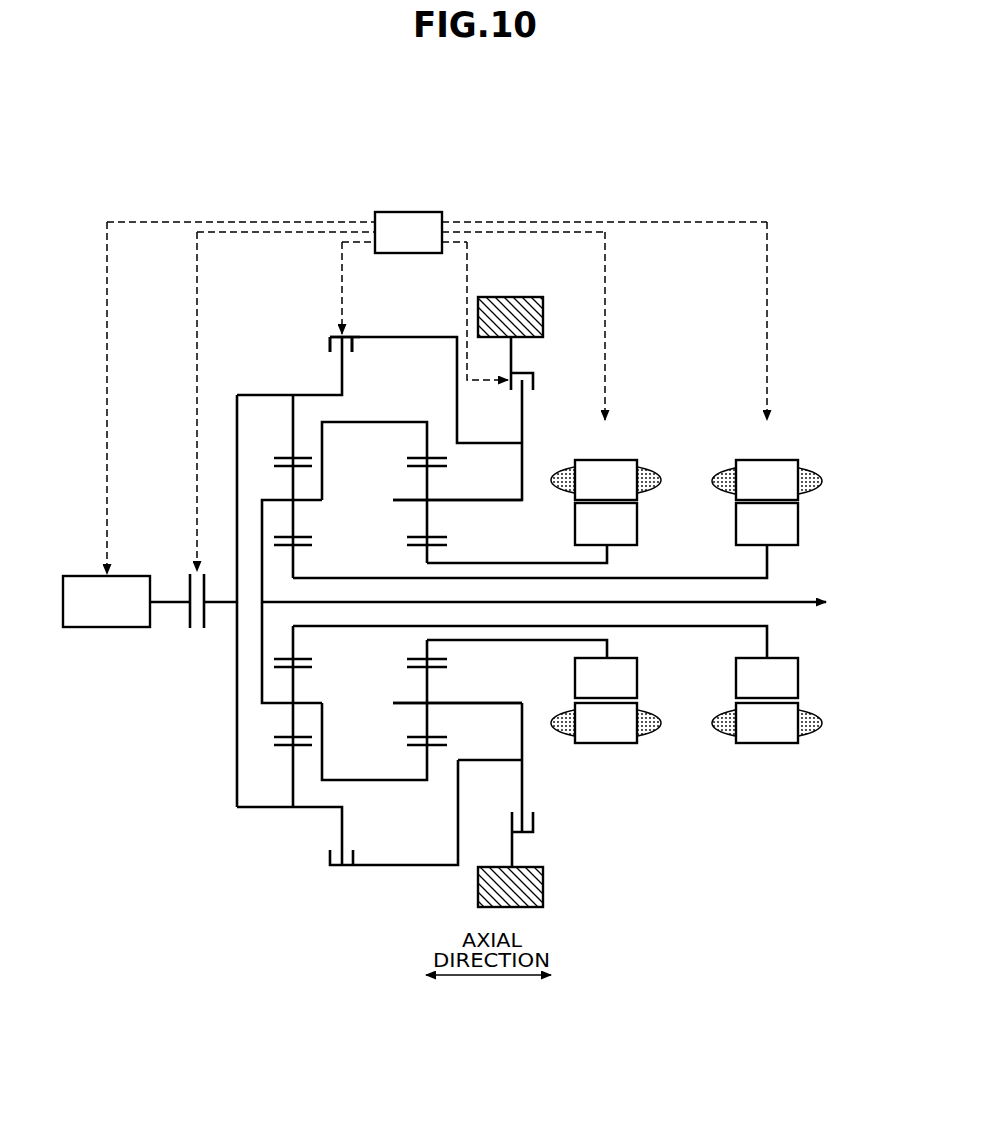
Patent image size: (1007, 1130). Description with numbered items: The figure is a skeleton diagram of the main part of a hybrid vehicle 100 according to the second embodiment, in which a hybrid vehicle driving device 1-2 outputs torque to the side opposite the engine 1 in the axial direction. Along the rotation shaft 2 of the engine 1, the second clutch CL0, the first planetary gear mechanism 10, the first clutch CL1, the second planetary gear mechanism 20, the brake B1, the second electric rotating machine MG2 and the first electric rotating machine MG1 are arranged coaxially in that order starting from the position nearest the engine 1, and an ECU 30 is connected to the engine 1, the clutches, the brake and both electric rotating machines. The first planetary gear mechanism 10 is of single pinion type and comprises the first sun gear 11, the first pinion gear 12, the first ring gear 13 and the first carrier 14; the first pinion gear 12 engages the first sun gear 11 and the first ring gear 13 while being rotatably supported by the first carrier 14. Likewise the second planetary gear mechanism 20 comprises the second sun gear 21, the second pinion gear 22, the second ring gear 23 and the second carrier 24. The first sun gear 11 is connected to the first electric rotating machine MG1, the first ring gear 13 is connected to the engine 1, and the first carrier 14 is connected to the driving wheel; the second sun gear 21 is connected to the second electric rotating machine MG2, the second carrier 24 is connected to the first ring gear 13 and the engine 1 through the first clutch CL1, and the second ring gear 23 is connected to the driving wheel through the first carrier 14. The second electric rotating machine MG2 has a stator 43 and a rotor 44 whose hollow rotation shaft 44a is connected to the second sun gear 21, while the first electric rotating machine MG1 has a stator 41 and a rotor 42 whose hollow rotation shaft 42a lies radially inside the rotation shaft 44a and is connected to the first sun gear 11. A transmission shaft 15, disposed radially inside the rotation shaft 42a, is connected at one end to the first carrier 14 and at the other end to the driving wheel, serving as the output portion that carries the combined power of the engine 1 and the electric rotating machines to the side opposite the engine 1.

The engine 1 is at (82, 575).
The rotation shaft 2 is at (167, 600).
The first planetary gear mechanism 10 is at (279, 438).
The first sun gear 11 is at (311, 542).
The first pinion gear 12 is at (275, 540).
The first ring gear 13 is at (276, 460).
The first carrier 14 is at (277, 498).
The transmission shaft 15 is at (795, 600).
The second planetary gear mechanism 20 is at (421, 416).
The second sun gear 21 is at (407, 547).
The second pinion gear 22 is at (447, 540).
The second ring gear 23 is at (447, 462).
The second carrier 24 is at (438, 498).
The ECU 30 is at (405, 212).
The stator 41 is at (822, 480).
The rotor 42 is at (798, 525).
The rotation shaft 42a is at (700, 577).
The stator 43 is at (662, 479).
The rotor 44 is at (637, 525).
The rotation shaft 44a is at (537, 562).
The hybrid vehicle 100 is at (283, 114).
The hybrid vehicle driving device 1-2 is at (356, 168).
The second clutch CL0 is at (196, 642).
The first clutch CL1 is at (322, 339).
The brake B1 is at (540, 383).
The first electric rotating machine MG1 is at (764, 445).
The second electric rotating machine MG2 is at (603, 445).